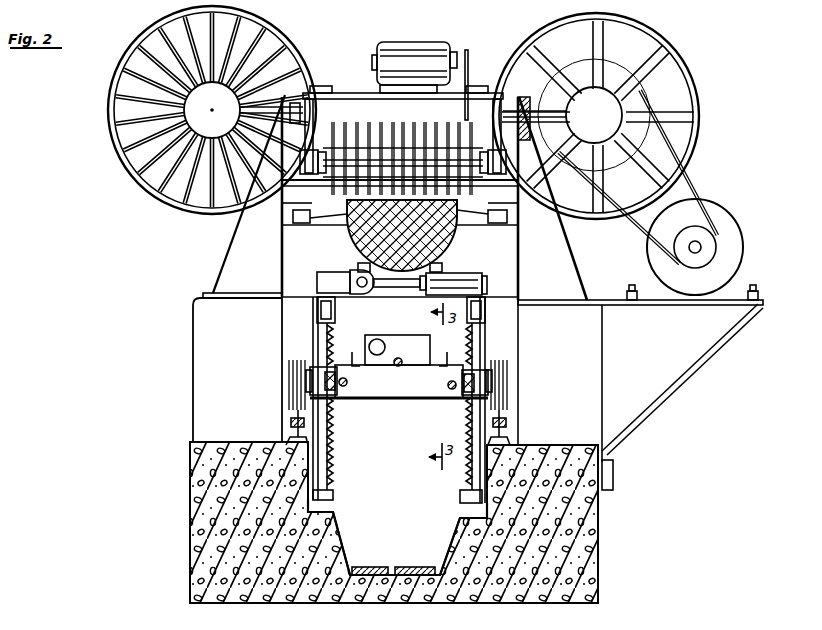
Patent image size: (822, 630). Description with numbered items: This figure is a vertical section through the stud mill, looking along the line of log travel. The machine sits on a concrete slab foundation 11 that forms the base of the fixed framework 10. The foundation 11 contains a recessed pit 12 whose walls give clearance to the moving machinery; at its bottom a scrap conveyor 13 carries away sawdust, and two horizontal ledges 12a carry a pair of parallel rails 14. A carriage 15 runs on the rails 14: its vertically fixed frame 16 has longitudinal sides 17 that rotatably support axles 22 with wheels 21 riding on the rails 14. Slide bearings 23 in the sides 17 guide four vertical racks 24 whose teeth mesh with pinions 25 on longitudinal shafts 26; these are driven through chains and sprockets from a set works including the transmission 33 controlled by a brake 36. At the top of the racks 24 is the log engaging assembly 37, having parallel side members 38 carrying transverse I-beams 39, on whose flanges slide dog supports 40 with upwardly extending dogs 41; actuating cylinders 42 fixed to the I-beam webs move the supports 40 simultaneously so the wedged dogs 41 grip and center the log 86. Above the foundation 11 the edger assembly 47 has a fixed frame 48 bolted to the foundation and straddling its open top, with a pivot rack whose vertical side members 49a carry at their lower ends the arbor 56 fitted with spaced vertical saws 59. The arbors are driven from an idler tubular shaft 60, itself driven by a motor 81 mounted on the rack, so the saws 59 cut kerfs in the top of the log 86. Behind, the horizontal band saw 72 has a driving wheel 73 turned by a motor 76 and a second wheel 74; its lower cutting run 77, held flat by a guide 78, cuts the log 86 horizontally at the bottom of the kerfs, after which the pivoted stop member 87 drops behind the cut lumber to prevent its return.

The fixed framework 10 is at (193, 347).
The concrete slab foundation 11 is at (595, 556).
The recessed pit 12 is at (337, 537).
The horizontal ledges 12a is at (299, 441).
The scrap conveyor 13 is at (409, 567).
The rails 14 is at (291, 421).
The carriage 15 is at (318, 283).
The frame 16 is at (379, 401).
The longitudinal sides 17 is at (312, 367).
The wheels 21 is at (296, 378).
The axles 22 is at (430, 401).
The slide bearings 23 is at (321, 383).
The vertical racks 24 is at (333, 452).
The pinions 25 is at (397, 355).
The longitudinal shafts 26 is at (348, 382).
The transmission 33 is at (405, 353).
The brake 36 is at (378, 340).
The log engaging assembly 37 is at (355, 270).
The side members 38 is at (317, 312).
The transverse I-beams 39 is at (495, 285).
The dog supports 40 is at (345, 282).
The dogs 41 is at (358, 265).
The actuating cylinders 42 is at (467, 280).
The edger assembly 47 is at (352, 93).
The fixed frame 48 is at (275, 194).
The vertical side members 49a is at (330, 87).
The arbor 56 is at (328, 180).
The vertical saws 59 is at (373, 126).
The idler tubular shaft 60 is at (380, 95).
The band saw 72 is at (106, 110).
The driving wheel 73 is at (528, 42).
The rotatable wheel 74 is at (317, 94).
The motor 76 is at (730, 230).
The lower cutting run 77 is at (340, 220).
The guide 78 is at (303, 206).
The motor 81 is at (432, 50).
The log 86 is at (410, 235).
The pivoted stop member 87 is at (476, 204).